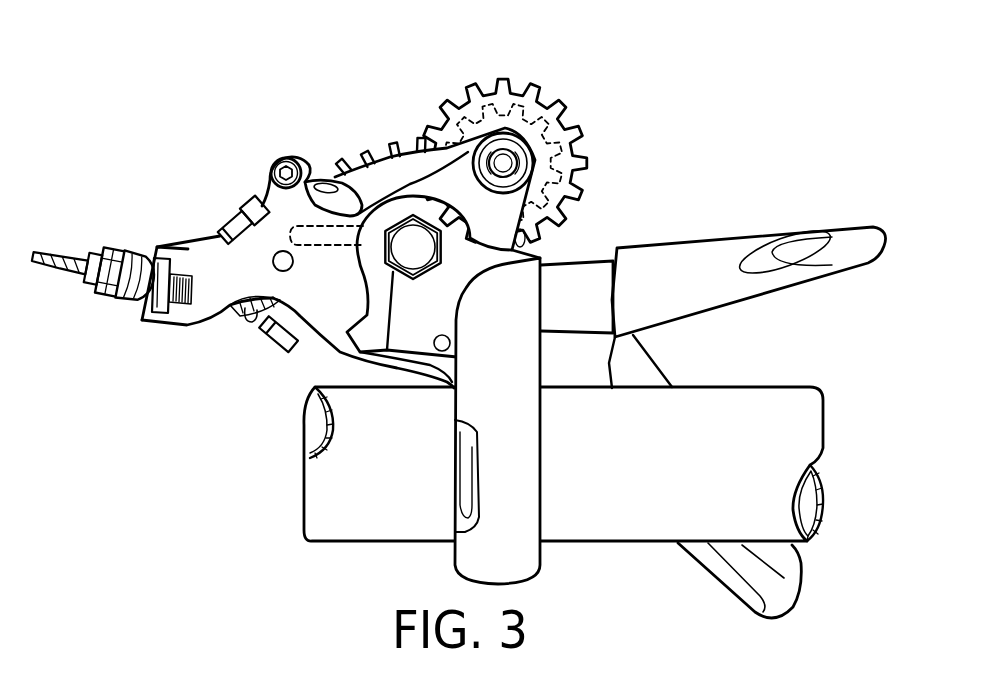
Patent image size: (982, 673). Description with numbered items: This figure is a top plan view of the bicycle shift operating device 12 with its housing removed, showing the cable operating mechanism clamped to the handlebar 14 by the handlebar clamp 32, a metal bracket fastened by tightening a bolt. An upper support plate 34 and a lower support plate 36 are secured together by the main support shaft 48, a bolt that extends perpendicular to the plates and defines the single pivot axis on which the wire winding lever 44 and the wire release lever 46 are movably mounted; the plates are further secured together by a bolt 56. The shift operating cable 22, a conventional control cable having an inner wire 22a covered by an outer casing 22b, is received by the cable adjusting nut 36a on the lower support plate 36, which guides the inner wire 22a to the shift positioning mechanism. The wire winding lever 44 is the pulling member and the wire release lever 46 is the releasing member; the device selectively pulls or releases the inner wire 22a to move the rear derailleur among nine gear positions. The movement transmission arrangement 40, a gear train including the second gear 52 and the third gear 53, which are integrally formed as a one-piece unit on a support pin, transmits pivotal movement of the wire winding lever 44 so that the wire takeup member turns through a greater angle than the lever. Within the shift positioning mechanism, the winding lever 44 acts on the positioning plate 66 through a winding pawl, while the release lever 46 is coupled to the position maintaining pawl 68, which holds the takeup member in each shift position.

The bicycle shift operating device 12 is at (185, 130).
The handlebar 14 is at (382, 541).
The shift operating cable 22 is at (94, 328).
The inner wire 22a is at (40, 268).
The outer casing 22b is at (92, 293).
The handlebar clamp 32 is at (545, 556).
The upper support plate 34 is at (191, 333).
The lower support plate 36 is at (211, 216).
The cable adjusting nut 36a is at (107, 235).
The movement transmission arrangement 40 is at (598, 208).
The wire winding lever 44 is at (716, 586).
The wire release lever 46 is at (774, 230).
The main support shaft 48 is at (413, 235).
The second gear 52 is at (580, 108).
The third gear 53 is at (587, 160).
The bolt 56 is at (276, 150).
The positioning plate 66 is at (367, 146).
The position maintaining pawl 68 is at (249, 190).